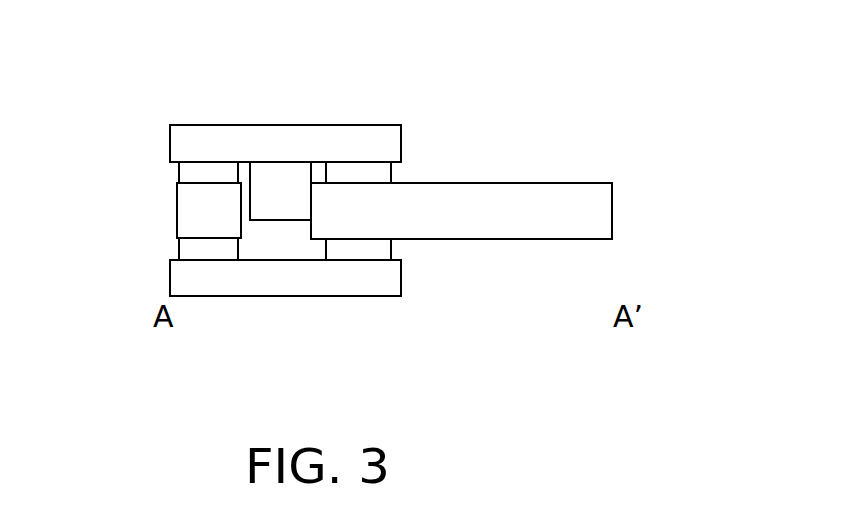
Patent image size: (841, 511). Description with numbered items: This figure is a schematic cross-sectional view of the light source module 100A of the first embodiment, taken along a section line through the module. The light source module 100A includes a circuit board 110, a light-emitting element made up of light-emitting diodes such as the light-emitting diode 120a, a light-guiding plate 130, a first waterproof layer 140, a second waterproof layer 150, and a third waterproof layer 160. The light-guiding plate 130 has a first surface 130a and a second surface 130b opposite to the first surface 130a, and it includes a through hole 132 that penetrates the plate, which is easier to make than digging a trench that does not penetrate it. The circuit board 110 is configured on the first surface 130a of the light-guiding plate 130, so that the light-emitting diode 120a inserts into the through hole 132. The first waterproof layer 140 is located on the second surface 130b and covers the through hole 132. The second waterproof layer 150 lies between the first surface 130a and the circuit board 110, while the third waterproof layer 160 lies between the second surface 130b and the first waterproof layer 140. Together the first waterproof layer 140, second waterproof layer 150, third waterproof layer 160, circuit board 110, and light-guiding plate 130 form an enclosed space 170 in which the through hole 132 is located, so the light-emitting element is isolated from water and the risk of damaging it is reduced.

The light source module 100A is at (704, 427).
The circuit board 110 is at (362, 143).
The light-emitting diode 120a is at (282, 188).
The light-guiding plate 130 is at (552, 197).
The first surface 130a is at (451, 183).
The second surface 130b is at (451, 239).
The through hole 132 is at (248, 237).
The first waterproof layer 140 is at (276, 277).
The second waterproof layer 150 is at (186, 172).
The third waterproof layer 160 is at (195, 248).
The enclosed space 170 is at (287, 237).